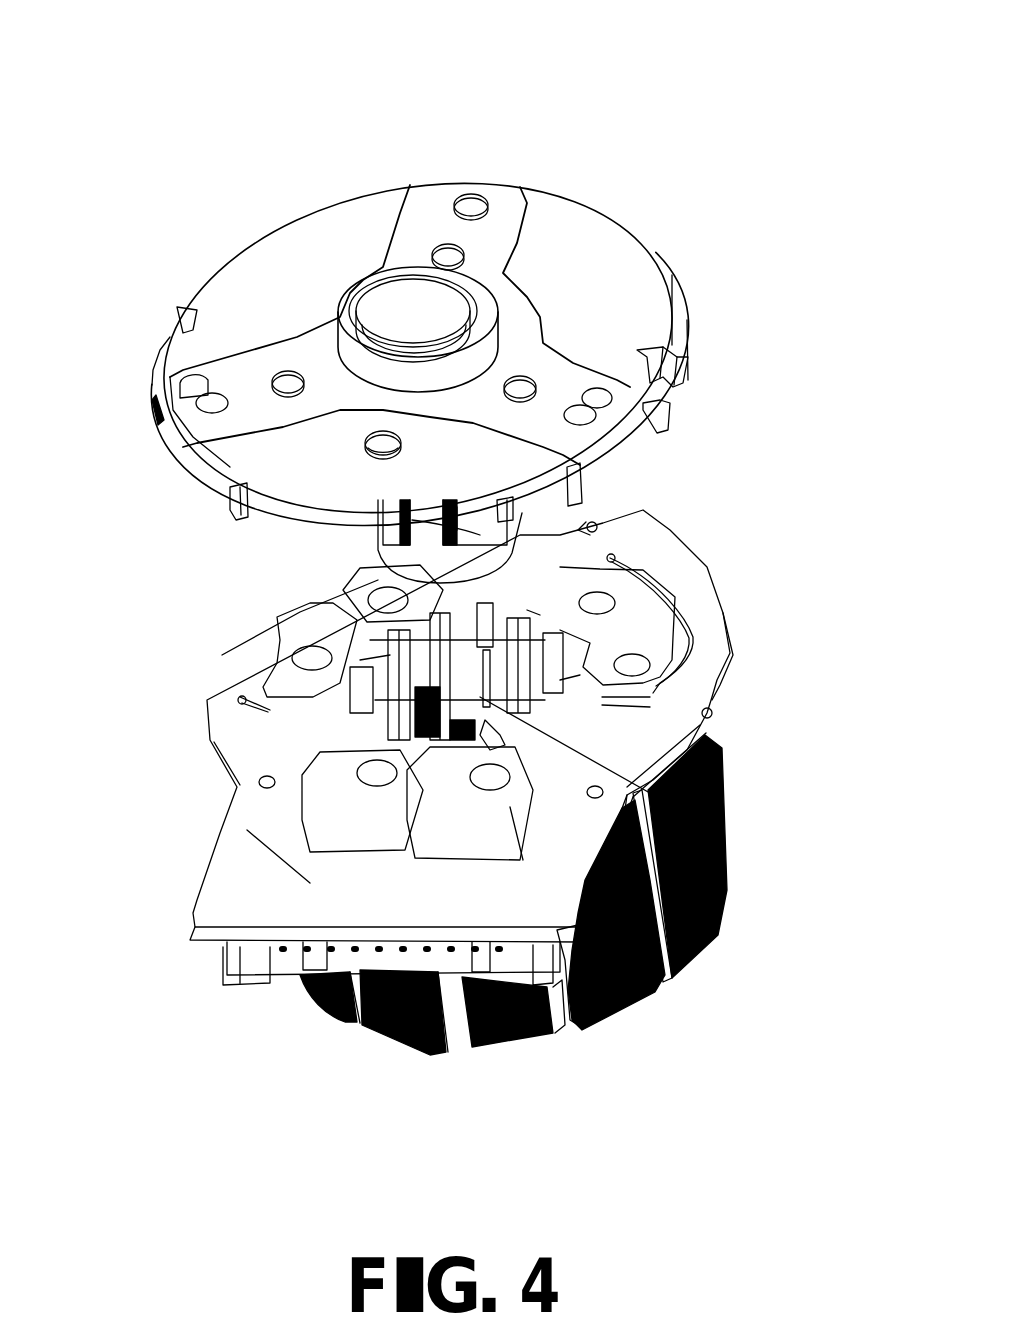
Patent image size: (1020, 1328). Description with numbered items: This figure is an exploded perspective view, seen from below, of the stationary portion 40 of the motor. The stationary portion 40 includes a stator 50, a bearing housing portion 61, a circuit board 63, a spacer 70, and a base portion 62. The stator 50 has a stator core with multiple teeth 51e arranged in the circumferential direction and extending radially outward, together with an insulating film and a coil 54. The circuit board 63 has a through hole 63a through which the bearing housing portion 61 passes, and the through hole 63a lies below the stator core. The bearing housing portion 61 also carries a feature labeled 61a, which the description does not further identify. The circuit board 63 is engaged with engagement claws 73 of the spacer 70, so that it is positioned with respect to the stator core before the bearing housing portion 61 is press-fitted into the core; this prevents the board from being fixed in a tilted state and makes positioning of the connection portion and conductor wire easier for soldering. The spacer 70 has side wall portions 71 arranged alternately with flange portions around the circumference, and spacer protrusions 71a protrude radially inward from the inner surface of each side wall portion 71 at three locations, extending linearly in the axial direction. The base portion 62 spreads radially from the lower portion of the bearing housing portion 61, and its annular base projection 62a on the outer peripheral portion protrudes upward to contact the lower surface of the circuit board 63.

The stationary portion 40 is at (588, 93).
The base portion 62 is at (268, 275).
The base projection 62a is at (218, 493).
The bearing housing portion 61 is at (390, 522).
The notch 61a is at (388, 520).
The circuit board 63 is at (220, 903).
The through hole 63a is at (350, 712).
The spacer 70 is at (653, 690).
The side wall portion 71 is at (720, 813).
The spacer protrusion 71a is at (530, 620).
The engagement claw 73 is at (598, 527).
The coil 54 is at (660, 1003).
The stator 50 is at (392, 1042).
The teeth 51e is at (507, 1053).